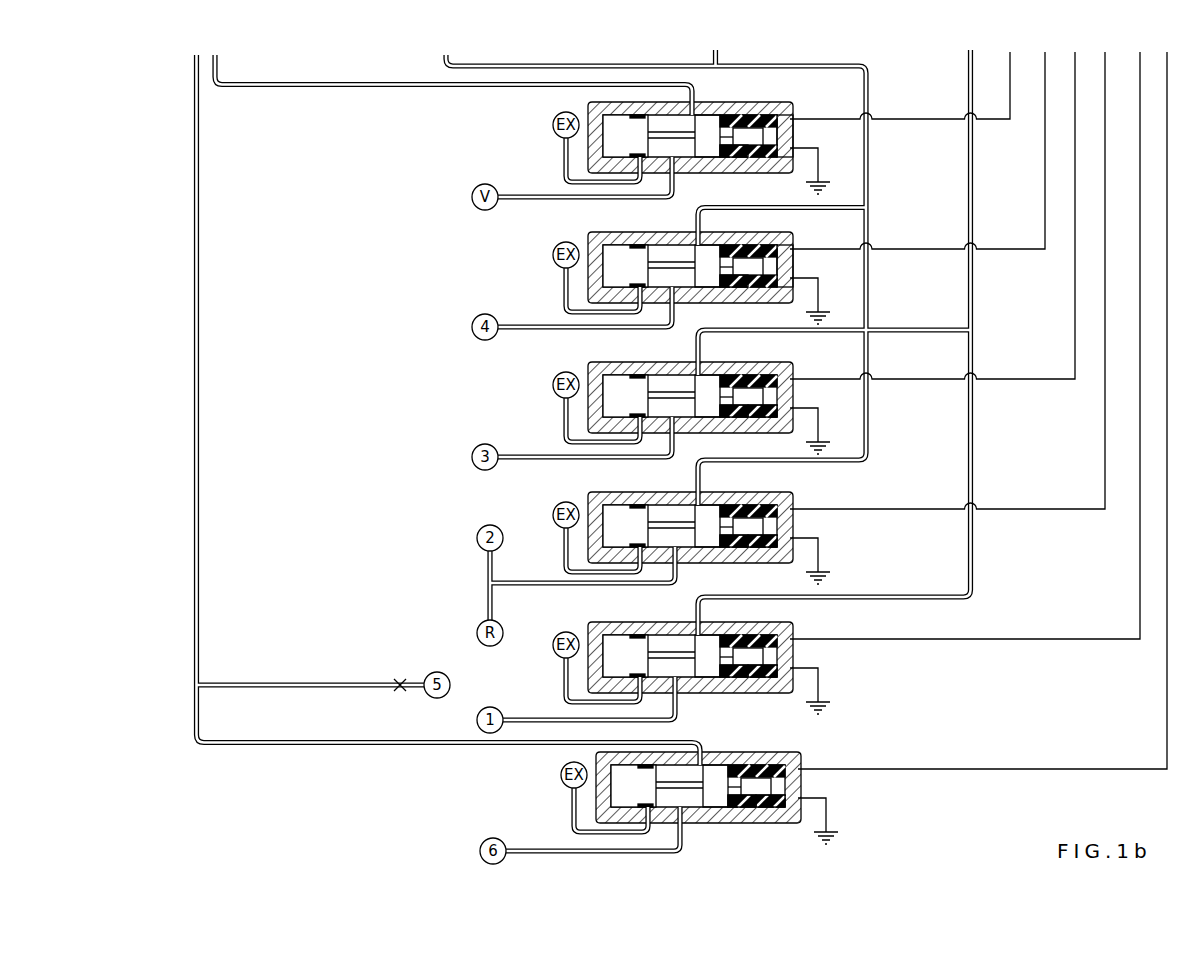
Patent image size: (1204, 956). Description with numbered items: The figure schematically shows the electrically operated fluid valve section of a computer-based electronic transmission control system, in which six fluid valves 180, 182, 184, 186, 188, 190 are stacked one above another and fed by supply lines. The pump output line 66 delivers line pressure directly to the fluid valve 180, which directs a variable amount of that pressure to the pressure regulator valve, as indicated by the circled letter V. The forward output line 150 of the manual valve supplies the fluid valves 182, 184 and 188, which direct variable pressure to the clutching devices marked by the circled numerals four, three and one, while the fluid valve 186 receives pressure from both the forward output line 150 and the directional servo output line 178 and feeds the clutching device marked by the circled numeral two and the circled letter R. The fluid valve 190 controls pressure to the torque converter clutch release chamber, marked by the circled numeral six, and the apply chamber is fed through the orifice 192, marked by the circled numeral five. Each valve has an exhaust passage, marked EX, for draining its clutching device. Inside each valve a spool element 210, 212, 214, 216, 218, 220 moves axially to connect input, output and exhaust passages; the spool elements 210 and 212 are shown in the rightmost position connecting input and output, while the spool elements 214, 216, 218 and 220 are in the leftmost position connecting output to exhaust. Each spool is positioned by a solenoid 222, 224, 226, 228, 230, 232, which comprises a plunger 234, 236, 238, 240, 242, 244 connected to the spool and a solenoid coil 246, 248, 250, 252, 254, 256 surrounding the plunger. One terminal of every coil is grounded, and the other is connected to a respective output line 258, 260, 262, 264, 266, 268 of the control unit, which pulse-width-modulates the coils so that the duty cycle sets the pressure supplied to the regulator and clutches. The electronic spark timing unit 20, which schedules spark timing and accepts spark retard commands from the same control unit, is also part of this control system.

The electronic spark timing unit 20 is at (200, 270).
The pump output line 66 is at (235, 90).
The forward output line 150 is at (447, 66).
The directional servo output line 178 is at (717, 58).
The fluid valve 180 is at (592, 105).
The fluid valve 182 is at (595, 236).
The fluid valve 184 is at (595, 366).
The fluid valve 186 is at (597, 496).
The fluid valve 188 is at (598, 626).
The fluid valve 190 is at (600, 778).
The orifice 192 is at (398, 678).
The spool element 210 is at (768, 98).
The spool element 212 is at (677, 234).
The spool element 214 is at (677, 364).
The spool element 216 is at (673, 493).
The spool element 218 is at (668, 624).
The spool element 220 is at (705, 820).
The solenoid 222 is at (790, 138).
The solenoid 224 is at (790, 272).
The solenoid 226 is at (790, 398).
The solenoid 228 is at (800, 526).
The solenoid 230 is at (800, 656).
The solenoid 232 is at (806, 786).
The plunger 234 is at (745, 160).
The plunger 236 is at (790, 240).
The plunger 238 is at (738, 420).
The plunger 240 is at (738, 550).
The plunger 242 is at (738, 685).
The plunger 244 is at (745, 815).
The solenoid coil 246 is at (790, 108).
The solenoid coil 248 is at (740, 290).
The solenoid coil 250 is at (752, 420).
The solenoid coil 252 is at (755, 550).
The solenoid coil 254 is at (752, 685).
The solenoid coil 256 is at (780, 815).
The output line 258 is at (998, 122).
The output line 260 is at (1015, 252).
The output line 262 is at (1040, 381).
The output line 264 is at (947, 309).
The output line 266 is at (1040, 641).
The output line 268 is at (975, 768).